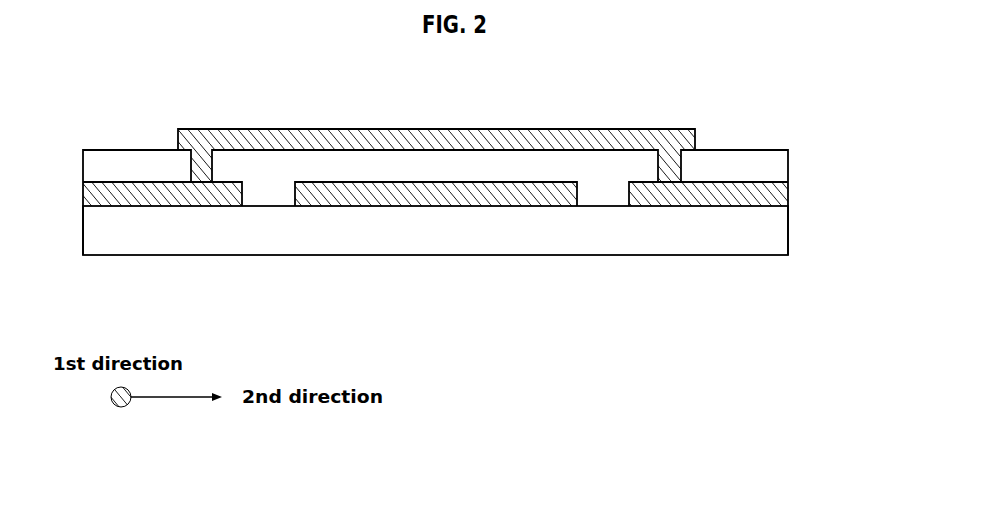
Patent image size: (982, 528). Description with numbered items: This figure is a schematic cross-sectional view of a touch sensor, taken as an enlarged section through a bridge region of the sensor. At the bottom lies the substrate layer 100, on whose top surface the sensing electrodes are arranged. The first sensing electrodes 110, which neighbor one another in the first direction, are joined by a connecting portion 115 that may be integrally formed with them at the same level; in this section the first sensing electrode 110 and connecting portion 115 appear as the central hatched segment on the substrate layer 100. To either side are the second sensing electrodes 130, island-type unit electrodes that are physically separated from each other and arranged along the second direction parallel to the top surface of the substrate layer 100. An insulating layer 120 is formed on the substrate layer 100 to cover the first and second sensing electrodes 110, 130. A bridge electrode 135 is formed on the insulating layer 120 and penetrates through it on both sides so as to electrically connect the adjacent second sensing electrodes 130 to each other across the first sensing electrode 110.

The substrate layer 100 is at (790, 227).
The first sensing electrodes 110 is at (436, 250).
The connecting portion 115 is at (428, 207).
The insulating layer 120 is at (790, 160).
The second sensing electrodes 130 is at (790, 190).
The bridge electrode 135 is at (438, 130).